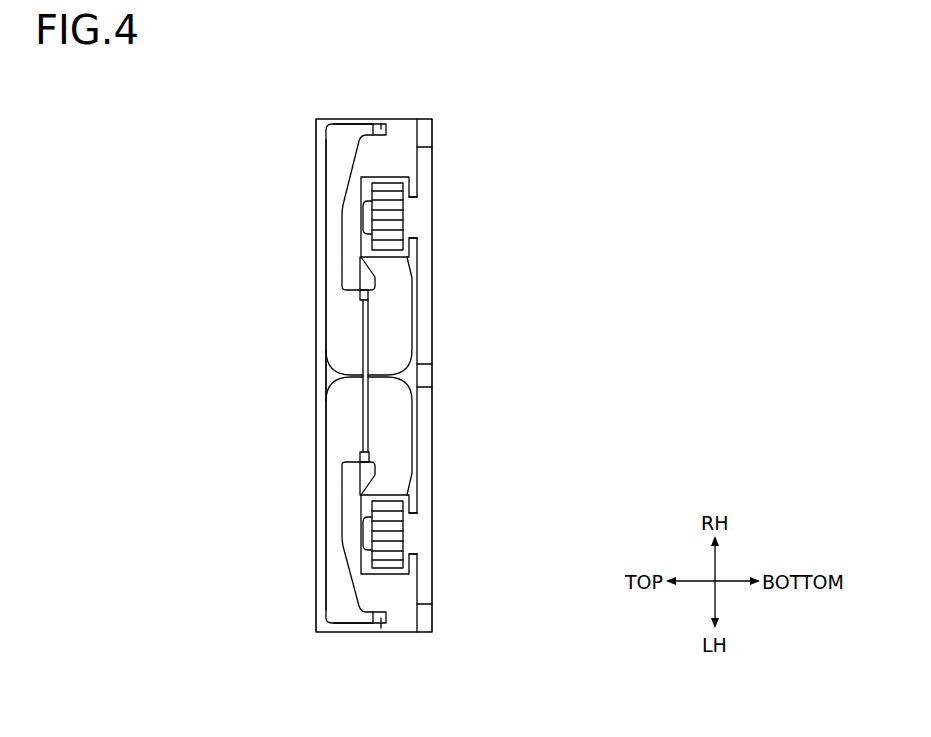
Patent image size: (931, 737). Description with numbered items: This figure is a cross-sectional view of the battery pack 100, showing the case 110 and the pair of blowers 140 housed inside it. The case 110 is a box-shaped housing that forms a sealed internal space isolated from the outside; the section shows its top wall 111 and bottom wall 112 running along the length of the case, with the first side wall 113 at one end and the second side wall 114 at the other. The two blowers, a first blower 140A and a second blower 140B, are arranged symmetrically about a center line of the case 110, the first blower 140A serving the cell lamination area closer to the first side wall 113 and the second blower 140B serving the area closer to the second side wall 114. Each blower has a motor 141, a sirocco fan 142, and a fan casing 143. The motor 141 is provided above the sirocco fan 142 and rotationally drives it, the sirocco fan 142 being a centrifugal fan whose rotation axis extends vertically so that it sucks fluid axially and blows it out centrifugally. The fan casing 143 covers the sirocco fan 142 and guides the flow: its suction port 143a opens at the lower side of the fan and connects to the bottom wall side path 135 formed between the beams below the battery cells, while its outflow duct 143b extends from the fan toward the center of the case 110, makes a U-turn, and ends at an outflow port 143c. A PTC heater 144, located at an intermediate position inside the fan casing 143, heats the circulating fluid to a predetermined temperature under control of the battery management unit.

The battery pack 100 is at (311, 106).
The case 110 is at (341, 119).
The top wall 111 is at (321, 306).
The bottom wall 112 is at (433, 301).
The first side wall 113 is at (341, 633).
The second side wall 114 is at (378, 119).
The bottom wall side path 135 is at (423, 187).
The blower 140 is at (467, 367).
The first blower 140A is at (388, 580).
The second blower 140B is at (393, 172).
The motor 141 is at (372, 217).
The sirocco fan 142 is at (382, 221).
The fan casing 143 is at (326, 333).
The suction port 143a is at (412, 216).
The outflow duct 143b is at (327, 158).
The outflow port 143c is at (390, 120).
The PTC heater 144 is at (363, 347).